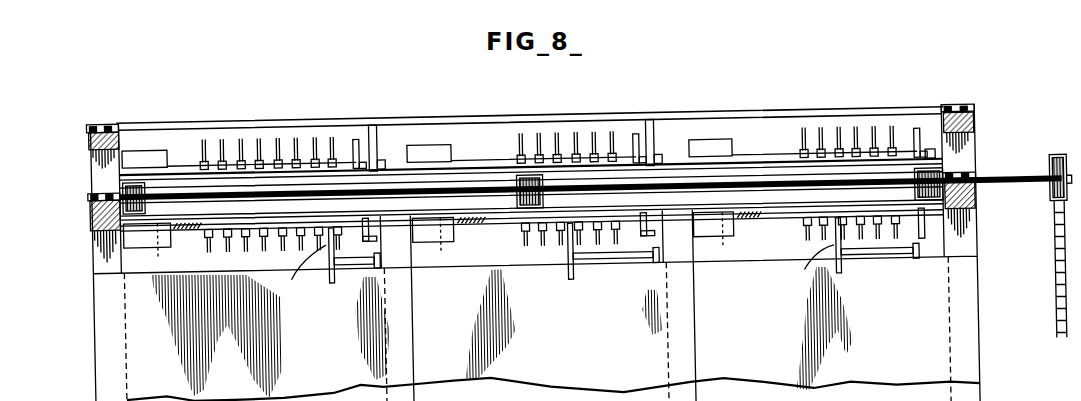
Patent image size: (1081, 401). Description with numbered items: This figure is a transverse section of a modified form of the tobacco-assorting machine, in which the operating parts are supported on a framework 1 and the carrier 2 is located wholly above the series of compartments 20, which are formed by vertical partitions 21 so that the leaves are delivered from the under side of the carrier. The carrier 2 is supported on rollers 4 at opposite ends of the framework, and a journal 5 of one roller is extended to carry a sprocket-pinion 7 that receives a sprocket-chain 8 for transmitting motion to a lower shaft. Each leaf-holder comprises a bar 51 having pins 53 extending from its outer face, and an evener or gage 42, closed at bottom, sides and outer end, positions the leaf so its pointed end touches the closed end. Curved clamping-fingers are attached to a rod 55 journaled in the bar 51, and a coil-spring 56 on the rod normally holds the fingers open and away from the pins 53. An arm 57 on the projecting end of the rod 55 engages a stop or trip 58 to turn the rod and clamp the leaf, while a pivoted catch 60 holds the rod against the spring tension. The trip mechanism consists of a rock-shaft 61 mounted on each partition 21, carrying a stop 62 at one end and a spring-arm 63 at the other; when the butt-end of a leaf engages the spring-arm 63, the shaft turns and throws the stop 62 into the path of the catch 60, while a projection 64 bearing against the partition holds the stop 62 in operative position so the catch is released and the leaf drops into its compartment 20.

The framework 1 is at (92, 229).
The carrier 2 is at (90, 171).
The rollers 4 is at (92, 206).
The journal 5 is at (1008, 185).
The sprocket-pinion 7 is at (1052, 174).
The sprocket-chain 8 is at (1054, 290).
The compartments 20 is at (502, 331).
The vertical partitions 21 is at (878, 385).
The evener or gage 42 is at (138, 147).
The bar 51 is at (188, 156).
The pins 53 is at (275, 147).
The rod 55 is at (374, 170).
The coil-spring 56 is at (481, 226).
The arm 57 is at (379, 161).
The stop or trip 58 is at (376, 148).
The pivoted catch 60 is at (357, 136).
The rock-shaft 61 is at (345, 259).
The stop 62 is at (378, 247).
The spring-arm 63 is at (555, 263).
The projection 64 is at (328, 274).